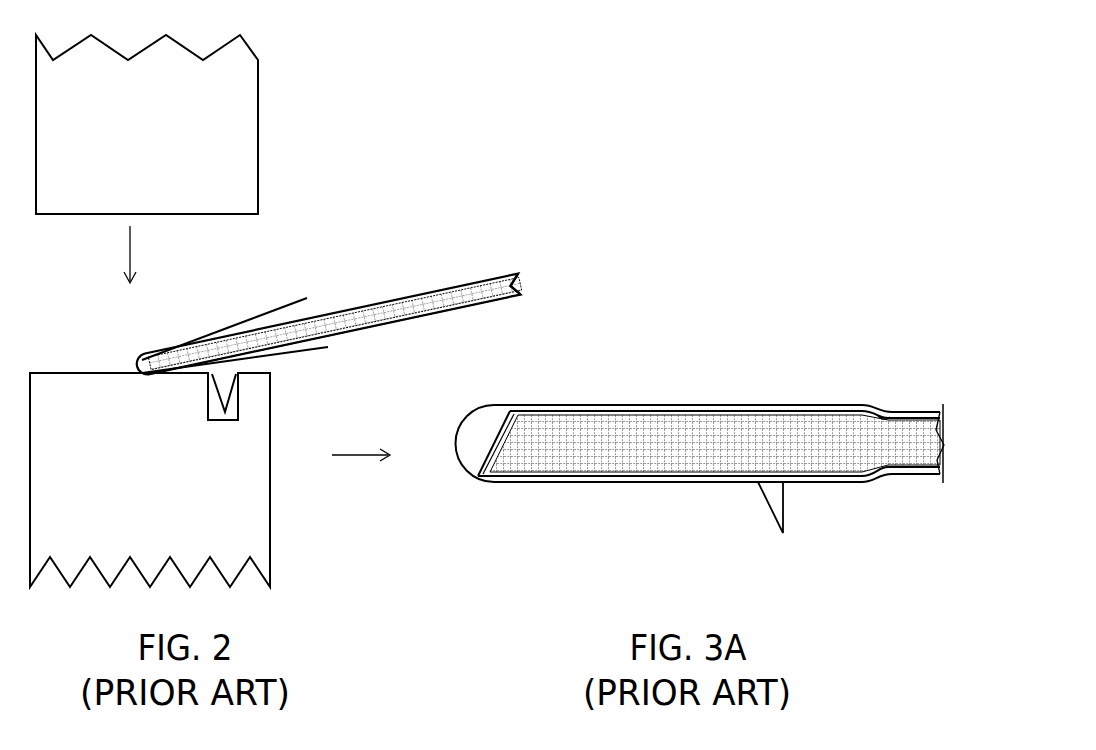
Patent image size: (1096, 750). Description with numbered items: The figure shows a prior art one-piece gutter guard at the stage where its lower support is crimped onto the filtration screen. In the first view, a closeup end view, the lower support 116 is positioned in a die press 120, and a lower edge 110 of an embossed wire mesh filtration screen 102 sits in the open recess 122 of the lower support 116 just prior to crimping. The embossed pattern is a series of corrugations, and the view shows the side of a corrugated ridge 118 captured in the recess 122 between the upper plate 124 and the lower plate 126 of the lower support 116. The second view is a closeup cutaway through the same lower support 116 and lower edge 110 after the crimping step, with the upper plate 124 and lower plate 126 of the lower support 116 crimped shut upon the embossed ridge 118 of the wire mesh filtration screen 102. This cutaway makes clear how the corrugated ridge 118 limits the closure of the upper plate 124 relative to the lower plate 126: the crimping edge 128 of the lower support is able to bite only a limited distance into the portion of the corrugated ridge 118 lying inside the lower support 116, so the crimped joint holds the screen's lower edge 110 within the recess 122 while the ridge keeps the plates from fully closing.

In FIG. 2, the wire mesh filtration screen 102 is at (479, 268).
In FIG. 3A, the wire mesh filtration screen 102 is at (905, 474).
In FIG. 2, the lower edge 110 is at (387, 324).
In FIG. 3A, the lower edge 110 is at (688, 410).
In FIG. 2, the lower support 116 is at (183, 347).
In FIG. 3A, the lower support 116 is at (784, 404).
In FIG. 2, the embossed ridge 118 is at (413, 300).
In FIG. 3A, the embossed ridge 118 is at (685, 455).
In FIG. 2, the die press 120 is at (172, 156).
In FIG. 2, the recess 122 is at (301, 314).
In FIG. 2, the upper plate 124 is at (255, 316).
In FIG. 3A, the upper plate 124 is at (558, 404).
In FIG. 2, the lower plate 126 is at (313, 351).
In FIG. 3A, the lower plate 126 is at (562, 483).
In FIG. 3A, the crimping edge 128 is at (886, 416).